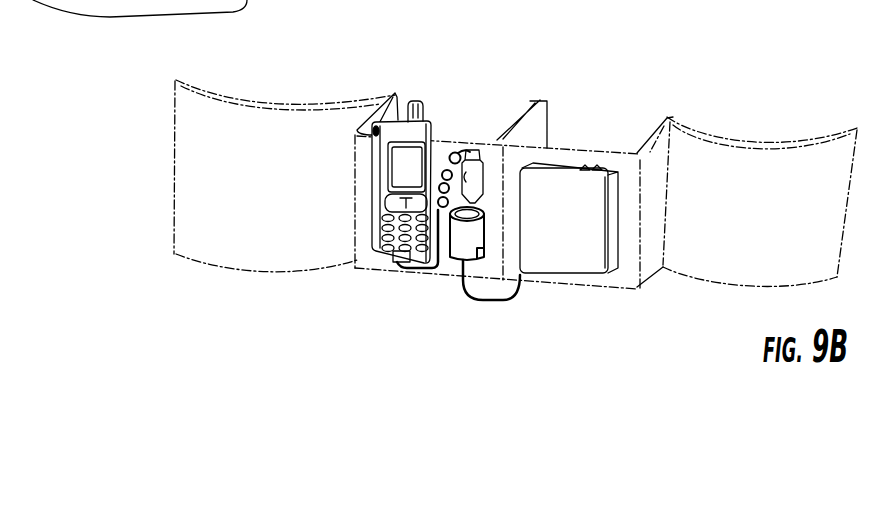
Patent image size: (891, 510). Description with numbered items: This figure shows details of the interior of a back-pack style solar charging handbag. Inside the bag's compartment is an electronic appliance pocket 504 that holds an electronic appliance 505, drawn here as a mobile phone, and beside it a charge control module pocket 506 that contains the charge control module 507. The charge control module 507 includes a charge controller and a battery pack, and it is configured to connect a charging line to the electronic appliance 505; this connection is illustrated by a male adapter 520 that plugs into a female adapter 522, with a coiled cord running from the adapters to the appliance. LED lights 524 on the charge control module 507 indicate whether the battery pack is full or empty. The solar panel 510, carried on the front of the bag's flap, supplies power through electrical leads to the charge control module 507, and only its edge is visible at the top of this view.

The electronic appliance pocket 504 is at (378, 120).
The electronic appliance 505 is at (404, 120).
The charge control module pocket 506 is at (652, 275).
The charge control module 507 is at (570, 275).
The solar panel 510 is at (125, 0).
The male adapter 520 is at (463, 150).
The female adapter 522 is at (460, 283).
The LED lights 524 is at (598, 167).